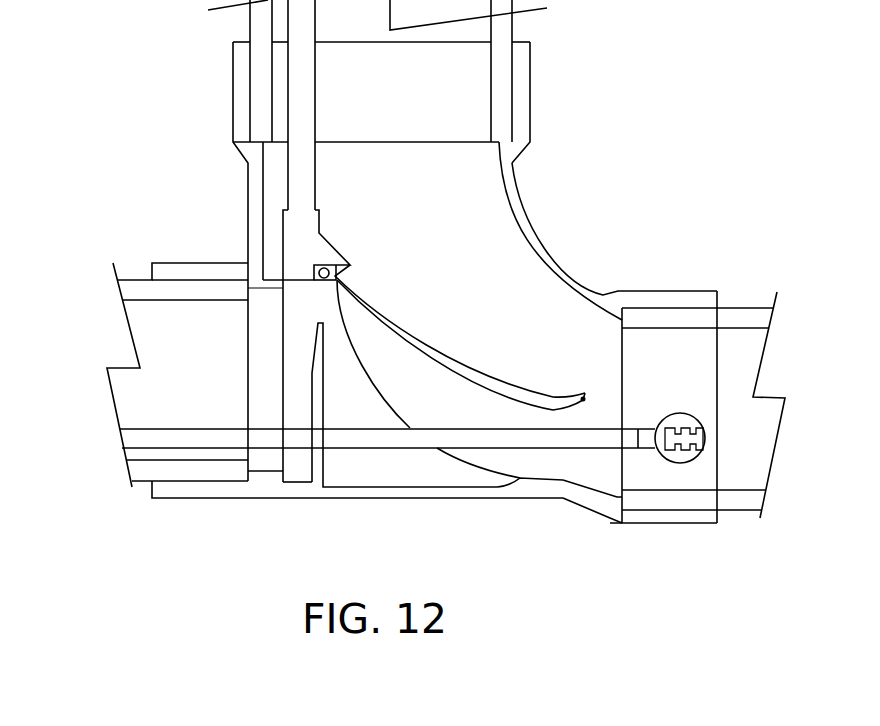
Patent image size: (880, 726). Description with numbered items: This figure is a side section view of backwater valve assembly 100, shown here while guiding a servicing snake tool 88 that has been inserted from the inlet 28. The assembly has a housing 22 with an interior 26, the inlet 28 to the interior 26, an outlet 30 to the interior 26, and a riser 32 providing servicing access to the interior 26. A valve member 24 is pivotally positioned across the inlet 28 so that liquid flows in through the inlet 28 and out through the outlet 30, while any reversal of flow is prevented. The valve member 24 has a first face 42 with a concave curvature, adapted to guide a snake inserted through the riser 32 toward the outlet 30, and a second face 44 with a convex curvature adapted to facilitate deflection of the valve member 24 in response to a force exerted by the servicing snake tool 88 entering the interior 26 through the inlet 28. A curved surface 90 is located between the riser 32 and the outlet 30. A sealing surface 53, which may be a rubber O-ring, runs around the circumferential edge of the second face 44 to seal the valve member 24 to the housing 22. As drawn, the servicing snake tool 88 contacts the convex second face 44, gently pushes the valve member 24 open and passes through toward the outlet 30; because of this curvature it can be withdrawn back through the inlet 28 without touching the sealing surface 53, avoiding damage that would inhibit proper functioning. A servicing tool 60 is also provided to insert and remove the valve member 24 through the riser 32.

The backwater valve assembly 100 is at (421, 321).
The servicing tool 60 is at (288, 187).
The riser 32 is at (530, 90).
The housing 22 is at (547, 243).
The curved surface 90 is at (515, 227).
The first face 42 is at (487, 382).
The sealing surface 53 is at (587, 397).
The valve member 24 is at (415, 350).
The inlet 28 is at (182, 500).
The outlet 30 is at (673, 523).
The interior 26 is at (548, 472).
The second face 44 is at (513, 403).
The servicing snake tool 88 is at (590, 450).